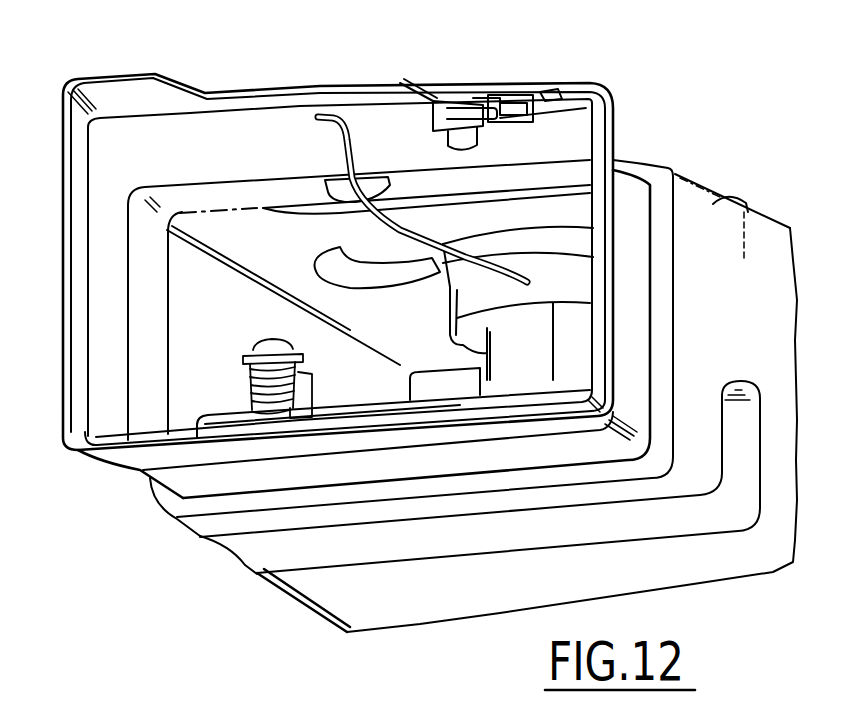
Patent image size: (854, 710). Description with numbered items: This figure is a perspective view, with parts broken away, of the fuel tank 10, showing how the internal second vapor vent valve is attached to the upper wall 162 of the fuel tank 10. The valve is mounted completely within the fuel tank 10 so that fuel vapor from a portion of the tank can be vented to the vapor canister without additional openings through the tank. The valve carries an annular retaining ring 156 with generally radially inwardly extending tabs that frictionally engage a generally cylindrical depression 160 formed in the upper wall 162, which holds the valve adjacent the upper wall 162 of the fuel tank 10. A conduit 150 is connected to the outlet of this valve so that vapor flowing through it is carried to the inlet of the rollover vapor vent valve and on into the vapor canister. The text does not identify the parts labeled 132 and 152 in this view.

The fuel tank 10 is at (608, 145).
The boss 132 is at (447, 142).
The conduit 150 is at (352, 116).
The bracket 152 is at (438, 97).
The annular retaining ring 156 is at (560, 84).
The cylindrical depression 160 is at (507, 96).
The upper wall 162 is at (572, 103).